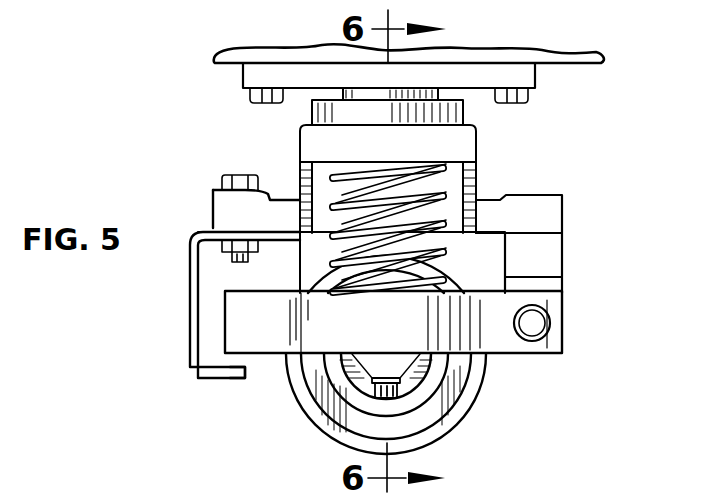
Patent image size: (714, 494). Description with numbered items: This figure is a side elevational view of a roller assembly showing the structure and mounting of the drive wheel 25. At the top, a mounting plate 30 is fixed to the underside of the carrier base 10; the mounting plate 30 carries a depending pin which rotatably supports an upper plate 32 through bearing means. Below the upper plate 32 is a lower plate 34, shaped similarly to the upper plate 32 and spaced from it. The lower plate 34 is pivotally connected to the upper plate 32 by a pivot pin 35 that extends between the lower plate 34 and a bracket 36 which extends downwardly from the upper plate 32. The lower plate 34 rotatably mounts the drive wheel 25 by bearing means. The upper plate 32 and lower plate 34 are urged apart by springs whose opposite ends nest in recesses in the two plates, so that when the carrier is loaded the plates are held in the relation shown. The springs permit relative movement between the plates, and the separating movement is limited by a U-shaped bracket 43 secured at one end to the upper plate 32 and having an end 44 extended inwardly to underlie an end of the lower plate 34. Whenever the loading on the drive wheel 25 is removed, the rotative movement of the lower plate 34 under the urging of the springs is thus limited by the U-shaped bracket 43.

The carrier base 10 is at (580, 58).
The mounting plate 30 is at (527, 80).
The upper plate 32 is at (553, 207).
The bracket 36 is at (563, 250).
The pivot pin 35 is at (533, 323).
The lower plate 34 is at (518, 354).
The drive wheel 25 is at (470, 417).
The U-shaped bracket 43 is at (190, 345).
The end of U-shaped bracket 44 is at (230, 378).